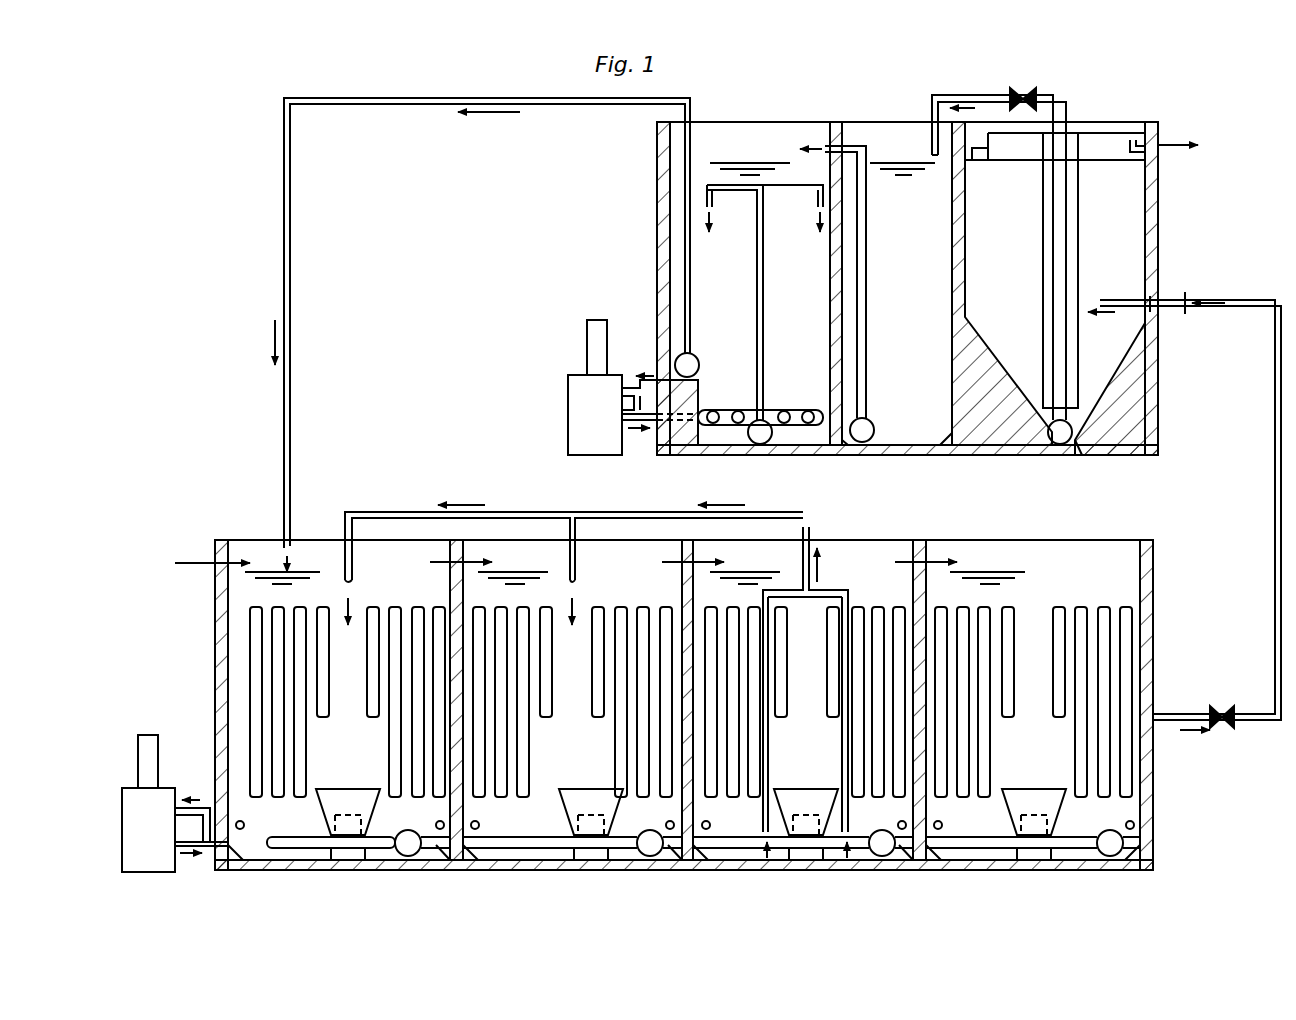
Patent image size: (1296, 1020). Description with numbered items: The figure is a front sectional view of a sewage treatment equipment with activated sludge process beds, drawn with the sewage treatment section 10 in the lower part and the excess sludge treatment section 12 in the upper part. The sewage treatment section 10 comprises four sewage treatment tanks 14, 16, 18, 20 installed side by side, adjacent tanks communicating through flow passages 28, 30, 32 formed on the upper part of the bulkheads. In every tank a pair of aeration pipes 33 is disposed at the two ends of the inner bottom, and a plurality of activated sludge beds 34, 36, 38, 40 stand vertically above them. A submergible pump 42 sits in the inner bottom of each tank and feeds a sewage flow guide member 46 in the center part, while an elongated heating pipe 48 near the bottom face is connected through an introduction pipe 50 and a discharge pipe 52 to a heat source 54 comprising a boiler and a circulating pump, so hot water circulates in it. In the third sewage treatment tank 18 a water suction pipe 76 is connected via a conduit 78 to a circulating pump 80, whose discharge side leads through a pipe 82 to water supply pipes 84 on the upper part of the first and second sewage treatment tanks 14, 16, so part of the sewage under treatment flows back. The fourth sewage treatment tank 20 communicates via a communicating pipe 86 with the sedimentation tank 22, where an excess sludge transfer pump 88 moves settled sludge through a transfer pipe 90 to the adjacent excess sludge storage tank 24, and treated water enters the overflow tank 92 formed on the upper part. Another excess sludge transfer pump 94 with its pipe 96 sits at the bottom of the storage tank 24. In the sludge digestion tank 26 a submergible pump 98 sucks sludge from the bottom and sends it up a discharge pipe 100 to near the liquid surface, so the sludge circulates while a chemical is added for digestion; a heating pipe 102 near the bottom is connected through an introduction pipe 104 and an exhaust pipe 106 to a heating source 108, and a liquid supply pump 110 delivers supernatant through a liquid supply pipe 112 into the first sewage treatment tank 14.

The sewage treatment section 10 is at (405, 492).
The excess sludge treatment section 12 is at (620, 172).
The first sewage treatment tank 14 is at (215, 606).
The second sewage treatment tank 16 is at (510, 540).
The third sewage treatment tank 18 is at (882, 540).
The fourth sewage treatment tank 20 is at (1153, 577).
The sedimentation tank 22 is at (1160, 208).
The excess sludge storage tank 24 is at (925, 455).
The sludge digestion tank 26 is at (657, 216).
The flow passage 28 is at (455, 562).
The flow passage 30 is at (690, 562).
The flow passage 32 is at (945, 562).
The aeration pipes 33 is at (244, 823).
The activated sludge beds 34 is at (372, 700).
The activated sludge beds 36 is at (548, 705).
The activated sludge beds 38 is at (832, 698).
The activated sludge beds 40 is at (1058, 692).
The submergible pump 42 is at (412, 858).
The sewage flow guide member 46 is at (348, 800).
The heating pipe 48 is at (540, 840).
The introduction pipe 50 is at (258, 850).
The discharge pipe 52 is at (205, 805).
The heat source 54 is at (148, 735).
The water suction pipe 76 is at (846, 862).
The conduit 78 is at (832, 590).
The circulating pump 80 is at (762, 445).
The pipe 82 is at (592, 512).
The water supply pipes 84 is at (355, 580).
The communicating pipe 86 is at (1172, 318).
The excess sludge transfer pump 88 is at (1060, 446).
The transfer pipe 90 is at (1078, 224).
The overflow tank 92 is at (1136, 138).
The excess sludge transfer pump 94 is at (875, 425).
The pipe 96 is at (868, 285).
The submergible pump 98 is at (766, 408).
The discharge pipe 100 is at (765, 300).
The heating pipe 102 is at (722, 425).
The introduction pipe 104 is at (632, 438).
The exhaust pipe 106 is at (634, 378).
The heating source 108 is at (567, 412).
The liquid supply pump 110 is at (703, 372).
The liquid supply pipe 112 is at (388, 112).